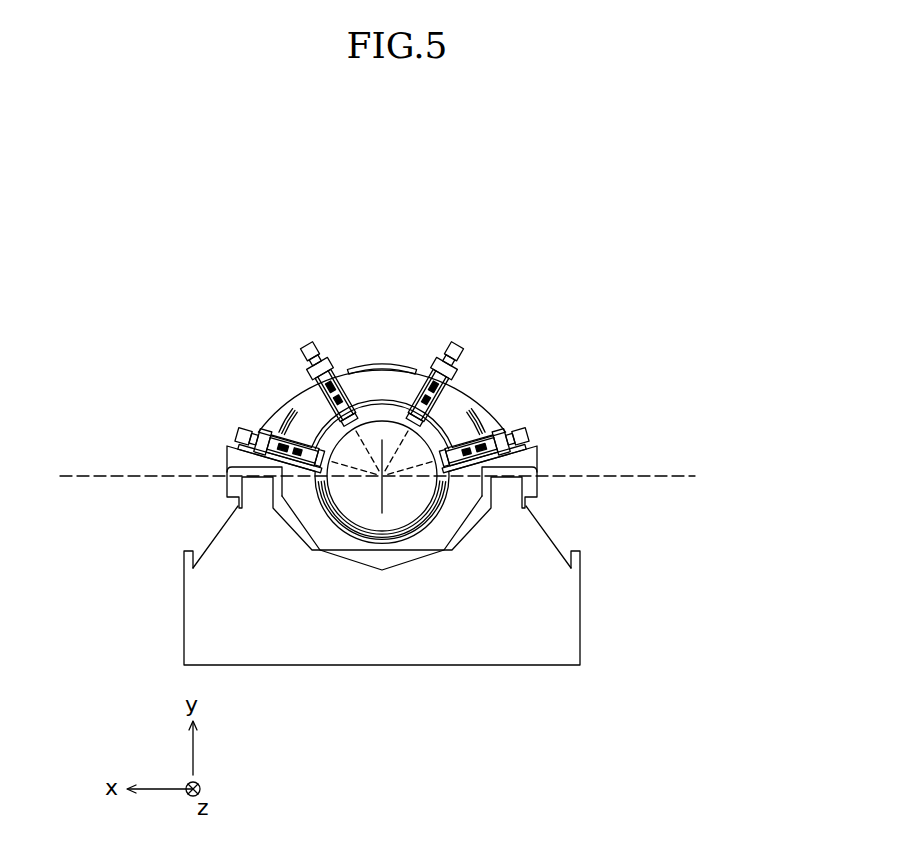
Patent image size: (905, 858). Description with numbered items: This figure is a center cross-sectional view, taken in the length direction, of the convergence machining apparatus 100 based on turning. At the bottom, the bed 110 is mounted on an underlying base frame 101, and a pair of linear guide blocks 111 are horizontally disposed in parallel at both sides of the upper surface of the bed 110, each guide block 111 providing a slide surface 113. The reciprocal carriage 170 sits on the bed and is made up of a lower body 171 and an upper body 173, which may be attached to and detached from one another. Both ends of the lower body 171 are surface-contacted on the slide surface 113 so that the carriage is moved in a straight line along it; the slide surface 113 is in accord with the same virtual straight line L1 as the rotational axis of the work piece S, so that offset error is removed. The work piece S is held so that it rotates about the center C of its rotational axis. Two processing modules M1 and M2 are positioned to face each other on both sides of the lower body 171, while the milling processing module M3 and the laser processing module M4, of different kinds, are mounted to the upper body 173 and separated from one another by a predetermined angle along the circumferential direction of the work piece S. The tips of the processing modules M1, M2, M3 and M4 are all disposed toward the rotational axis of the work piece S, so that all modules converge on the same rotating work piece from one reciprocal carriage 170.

The convergence machining apparatus 100 is at (100, 267).
The base frame 101 is at (565, 630).
The bed 110 is at (525, 533).
The linear guide blocks 111 is at (257, 499).
The slide surface 113 is at (257, 482).
The reciprocal carriage 170 is at (462, 364).
The lower body 171 is at (503, 420).
The upper body 173 is at (462, 411).
The processing module M1 is at (298, 436).
The processing module M2 is at (406, 436).
The milling processing module M3 is at (450, 346).
The laser processing module M4 is at (316, 347).
The work piece S is at (405, 512).
The center of rotational axis C is at (382, 471).
The virtual straight line L1 is at (395, 476).